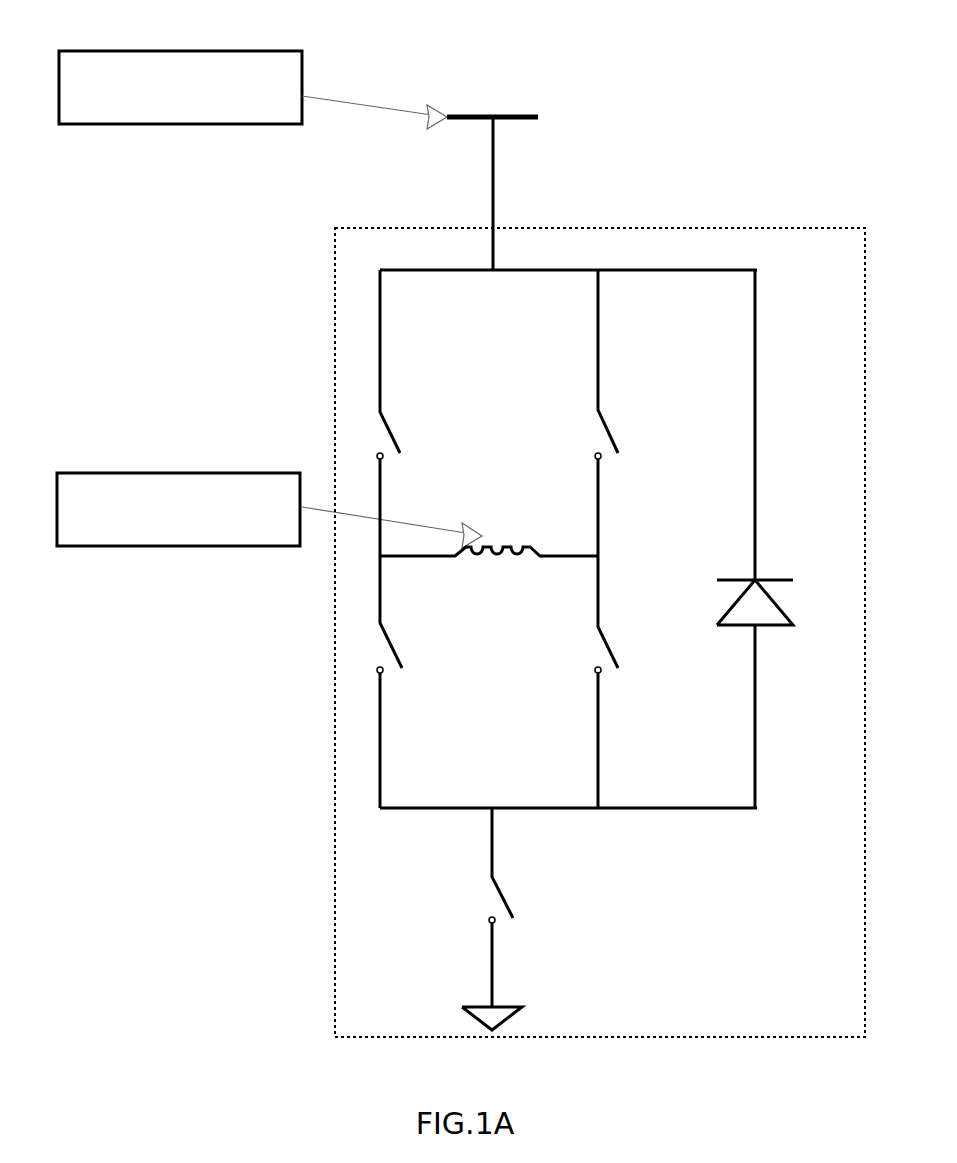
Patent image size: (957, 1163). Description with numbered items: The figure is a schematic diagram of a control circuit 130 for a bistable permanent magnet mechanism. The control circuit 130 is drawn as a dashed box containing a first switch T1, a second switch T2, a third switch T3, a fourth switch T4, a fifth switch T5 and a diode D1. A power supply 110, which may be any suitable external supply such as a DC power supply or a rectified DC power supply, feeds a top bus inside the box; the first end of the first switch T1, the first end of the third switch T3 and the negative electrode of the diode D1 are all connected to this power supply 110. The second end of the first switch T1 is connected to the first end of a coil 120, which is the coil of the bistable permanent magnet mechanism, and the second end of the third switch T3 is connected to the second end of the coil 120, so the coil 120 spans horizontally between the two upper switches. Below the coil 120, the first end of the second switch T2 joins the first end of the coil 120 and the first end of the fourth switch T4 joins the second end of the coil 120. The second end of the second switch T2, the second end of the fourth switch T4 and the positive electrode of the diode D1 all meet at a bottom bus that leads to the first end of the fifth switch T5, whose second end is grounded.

The power supply 110 is at (298, 136).
The coil 120 is at (327, 506).
The control circuit 130 is at (600, 606).
The first switch T1 is at (406, 413).
The second switch T2 is at (406, 682).
The third switch T3 is at (624, 413).
The fourth switch T4 is at (624, 682).
The fifth switch T5 is at (507, 919).
The diode D1 is at (783, 539).